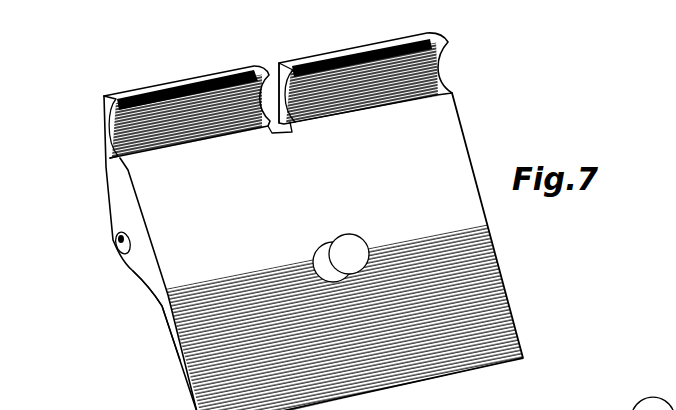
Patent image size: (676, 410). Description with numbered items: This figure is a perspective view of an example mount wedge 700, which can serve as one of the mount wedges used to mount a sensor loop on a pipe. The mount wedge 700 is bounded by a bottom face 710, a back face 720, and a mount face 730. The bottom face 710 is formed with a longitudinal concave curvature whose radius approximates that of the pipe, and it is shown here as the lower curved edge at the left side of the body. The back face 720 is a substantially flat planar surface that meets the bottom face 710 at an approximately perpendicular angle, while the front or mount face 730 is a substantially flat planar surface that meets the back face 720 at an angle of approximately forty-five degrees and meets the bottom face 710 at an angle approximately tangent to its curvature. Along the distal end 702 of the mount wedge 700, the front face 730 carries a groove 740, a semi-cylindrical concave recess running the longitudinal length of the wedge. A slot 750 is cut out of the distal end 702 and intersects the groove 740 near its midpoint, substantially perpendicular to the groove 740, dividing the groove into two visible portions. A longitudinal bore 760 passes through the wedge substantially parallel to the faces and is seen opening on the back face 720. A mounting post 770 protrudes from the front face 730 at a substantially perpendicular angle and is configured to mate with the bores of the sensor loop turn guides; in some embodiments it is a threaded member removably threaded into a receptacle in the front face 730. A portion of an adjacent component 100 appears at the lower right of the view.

The mount wedge 700 is at (327, 213).
The distal end 702 is at (103, 113).
The bottom face 710 is at (158, 303).
The back face 720 is at (108, 165).
The mount face 730 is at (369, 187).
The groove 740 is at (437, 71).
The slot 750 is at (269, 68).
The longitudinal bore 760 is at (120, 247).
The mounting post 770 is at (323, 254).
The adjacent component 100 is at (573, 400).